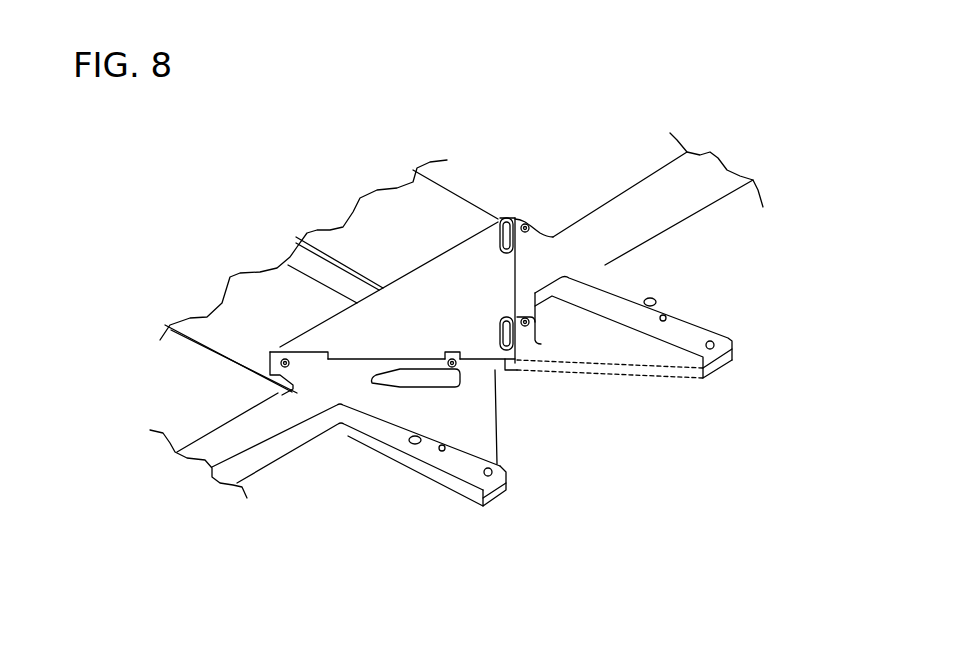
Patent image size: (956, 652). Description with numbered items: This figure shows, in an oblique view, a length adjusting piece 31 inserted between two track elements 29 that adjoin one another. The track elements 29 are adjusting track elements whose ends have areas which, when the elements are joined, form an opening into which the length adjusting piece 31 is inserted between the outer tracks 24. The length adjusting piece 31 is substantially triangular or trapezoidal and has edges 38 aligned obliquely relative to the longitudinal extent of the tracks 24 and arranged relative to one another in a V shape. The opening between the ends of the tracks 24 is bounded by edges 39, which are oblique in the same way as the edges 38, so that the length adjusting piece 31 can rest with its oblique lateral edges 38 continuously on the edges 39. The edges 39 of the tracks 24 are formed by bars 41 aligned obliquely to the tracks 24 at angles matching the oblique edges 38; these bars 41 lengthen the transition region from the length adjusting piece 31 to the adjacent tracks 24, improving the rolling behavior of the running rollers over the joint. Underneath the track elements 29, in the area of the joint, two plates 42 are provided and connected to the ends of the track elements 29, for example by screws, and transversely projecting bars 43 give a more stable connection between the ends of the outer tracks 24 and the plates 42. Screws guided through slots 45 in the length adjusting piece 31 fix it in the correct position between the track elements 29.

The outer track 24 is at (630, 212).
The track element 29 is at (525, 197).
The length adjusting piece 31 is at (445, 320).
The edge 38 is at (468, 365).
The edge 39 is at (368, 360).
The bar 41 is at (420, 367).
The plate 42 is at (243, 333).
The bar 43 is at (680, 323).
The slot 45 is at (307, 352).